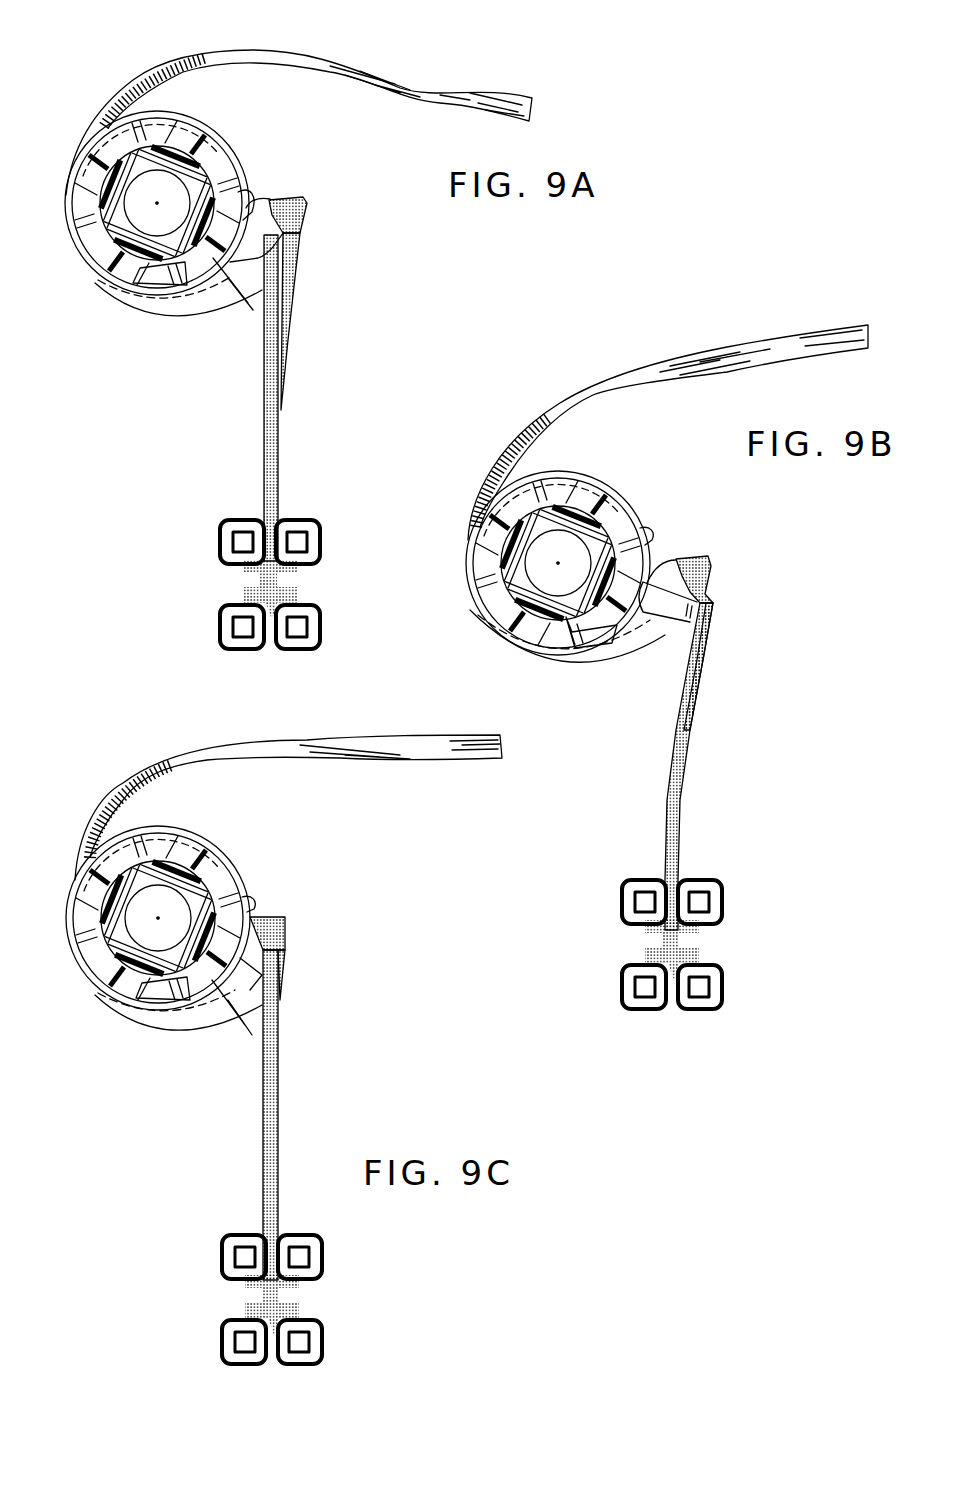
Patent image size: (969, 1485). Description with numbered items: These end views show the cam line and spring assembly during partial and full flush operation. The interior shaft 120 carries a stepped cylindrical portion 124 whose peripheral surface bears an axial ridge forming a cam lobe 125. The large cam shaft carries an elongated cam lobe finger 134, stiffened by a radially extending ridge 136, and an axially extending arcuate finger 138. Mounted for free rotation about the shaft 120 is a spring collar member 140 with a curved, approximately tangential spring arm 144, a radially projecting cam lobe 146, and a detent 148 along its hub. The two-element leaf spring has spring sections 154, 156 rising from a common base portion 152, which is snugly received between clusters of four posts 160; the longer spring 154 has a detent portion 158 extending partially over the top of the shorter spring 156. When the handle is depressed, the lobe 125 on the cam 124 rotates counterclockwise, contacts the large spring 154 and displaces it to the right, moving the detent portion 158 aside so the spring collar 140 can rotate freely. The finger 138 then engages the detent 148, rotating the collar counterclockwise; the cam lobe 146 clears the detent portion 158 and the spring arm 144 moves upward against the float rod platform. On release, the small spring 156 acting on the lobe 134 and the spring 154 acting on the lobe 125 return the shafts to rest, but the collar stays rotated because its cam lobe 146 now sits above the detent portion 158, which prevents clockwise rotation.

In FIG. 9A, the interior shaft 120 is at (200, 168).
In FIG. 9B, the interior shaft 120 is at (588, 524).
In FIG. 9C, the interior shaft 120 is at (190, 840).
In FIG. 9A, the stepped cylindrical portion 124 is at (218, 150).
In FIG. 9B, the stepped cylindrical portion 124 is at (606, 481).
In FIG. 9C, the stepped cylindrical portion 124 is at (227, 840).
In FIG. 9A, the cam lobe 125 is at (272, 198).
In FIG. 9B, the cam lobe 125 is at (663, 567).
In FIG. 9C, the cam lobe 125 is at (255, 977).
In FIG. 9A, the cam lobe finger 134 is at (232, 292).
In FIG. 9B, the cam lobe finger 134 is at (681, 603).
In FIG. 9C, the cam lobe finger 134 is at (247, 1017).
In FIG. 9A, the radially extending ridge 136 is at (185, 312).
In FIG. 9B, the radially extending ridge 136 is at (590, 655).
In FIG. 9C, the radially extending ridge 136 is at (187, 1033).
In FIG. 9A, the arcuate finger 138 is at (115, 290).
In FIG. 9B, the arcuate finger 138 is at (538, 650).
In FIG. 9C, the arcuate finger 138 is at (150, 997).
In FIG. 9A, the spring collar member 140 is at (138, 75).
In FIG. 9B, the spring collar member 140 is at (566, 474).
In FIG. 9C, the spring collar member 140 is at (116, 800).
In FIG. 9A, the spring arm 144 is at (464, 82).
In FIG. 9B, the spring arm 144 is at (803, 334).
In FIG. 9C, the spring arm 144 is at (382, 737).
In FIG. 9A, the cam lobe 146 is at (243, 182).
In FIG. 9B, the cam lobe 146 is at (649, 531).
In FIG. 9C, the cam lobe 146 is at (247, 893).
In FIG. 9A, the detent 148 is at (165, 298).
In FIG. 9B, the detent 148 is at (606, 639).
In FIG. 9C, the detent 148 is at (187, 1020).
In FIG. 9A, the base portion 152 is at (245, 582).
In FIG. 9B, the base portion 152 is at (660, 938).
In FIG. 9C, the base portion 152 is at (253, 1298).
In FIG. 9A, the spring section 154 is at (289, 297).
In FIG. 9B, the spring section 154 is at (714, 596).
In FIG. 9C, the spring section 154 is at (282, 950).
In FIG. 9A, the spring section 156 is at (263, 352).
In FIG. 9B, the spring section 156 is at (705, 632).
In FIG. 9C, the spring section 156 is at (275, 1073).
In FIG. 9A, the detent portion 158 is at (306, 202).
In FIG. 9B, the detent portion 158 is at (708, 556).
In FIG. 9C, the detent portion 158 is at (282, 917).
In FIG. 9A, the posts 160 is at (320, 603).
In FIG. 9B, the posts 160 is at (722, 908).
In FIG. 9C, the posts 160 is at (320, 1267).